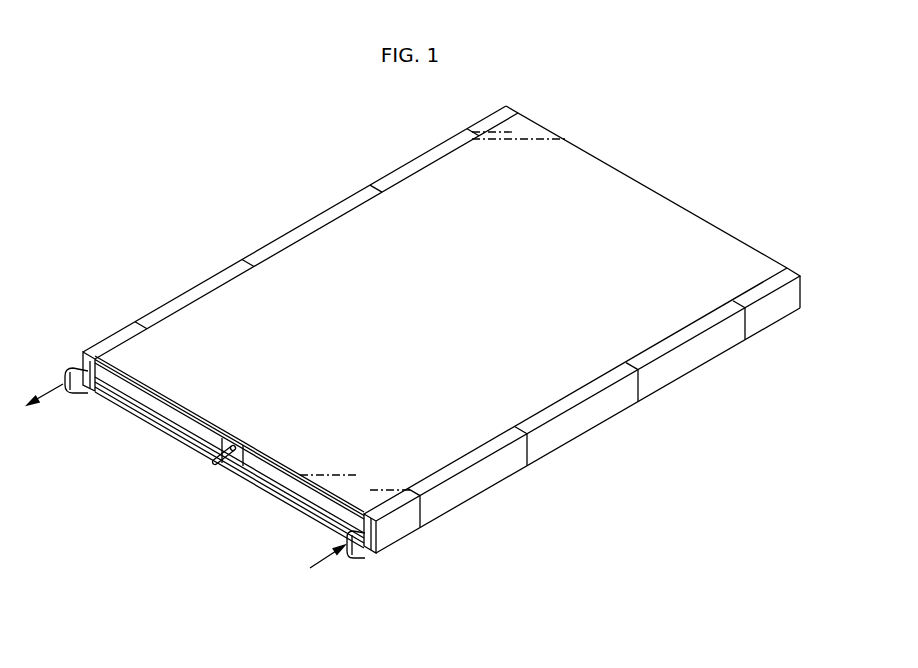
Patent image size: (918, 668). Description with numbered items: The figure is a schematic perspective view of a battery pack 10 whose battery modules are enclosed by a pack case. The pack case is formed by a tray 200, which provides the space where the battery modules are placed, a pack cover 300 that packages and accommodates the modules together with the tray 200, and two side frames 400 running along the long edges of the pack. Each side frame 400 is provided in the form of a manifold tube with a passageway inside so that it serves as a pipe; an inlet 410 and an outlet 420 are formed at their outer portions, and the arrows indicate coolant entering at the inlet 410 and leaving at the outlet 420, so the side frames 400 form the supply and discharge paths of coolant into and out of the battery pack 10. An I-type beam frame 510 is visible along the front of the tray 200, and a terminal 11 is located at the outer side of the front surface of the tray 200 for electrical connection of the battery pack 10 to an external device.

The battery pack 10 is at (188, 127).
The pack cover 300 is at (673, 215).
The side frame 400 is at (220, 275).
The I-type beam frame 510 is at (160, 407).
The tray 200 is at (287, 500).
The terminal 11 is at (215, 457).
The outlet 420 is at (67, 388).
The inlet 410 is at (349, 556).